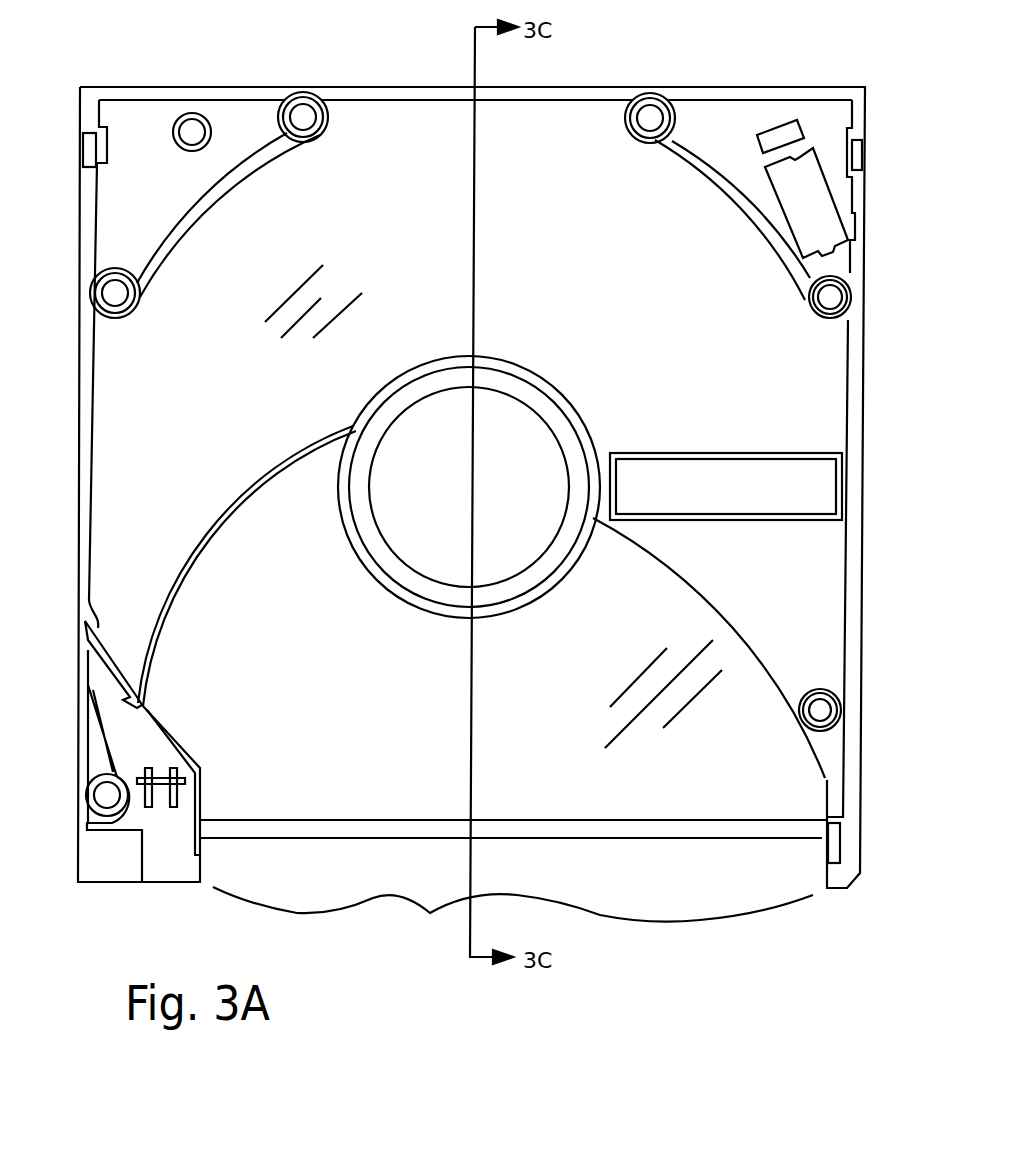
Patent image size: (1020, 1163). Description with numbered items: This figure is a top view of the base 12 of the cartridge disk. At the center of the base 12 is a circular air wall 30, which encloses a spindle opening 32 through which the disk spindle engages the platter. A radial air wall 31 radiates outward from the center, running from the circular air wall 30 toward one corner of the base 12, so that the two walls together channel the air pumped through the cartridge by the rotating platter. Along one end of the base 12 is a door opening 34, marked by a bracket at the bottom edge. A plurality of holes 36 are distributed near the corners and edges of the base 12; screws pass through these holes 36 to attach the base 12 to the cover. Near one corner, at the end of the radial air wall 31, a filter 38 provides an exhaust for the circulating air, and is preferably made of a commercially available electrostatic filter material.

The base 12 is at (840, 86).
The circular air wall 30 is at (521, 366).
The radial air wall 31 is at (267, 485).
The spindle opening 32 is at (438, 517).
The door opening 34 is at (513, 885).
The holes 36 is at (303, 92).
The filter 38 is at (113, 651).